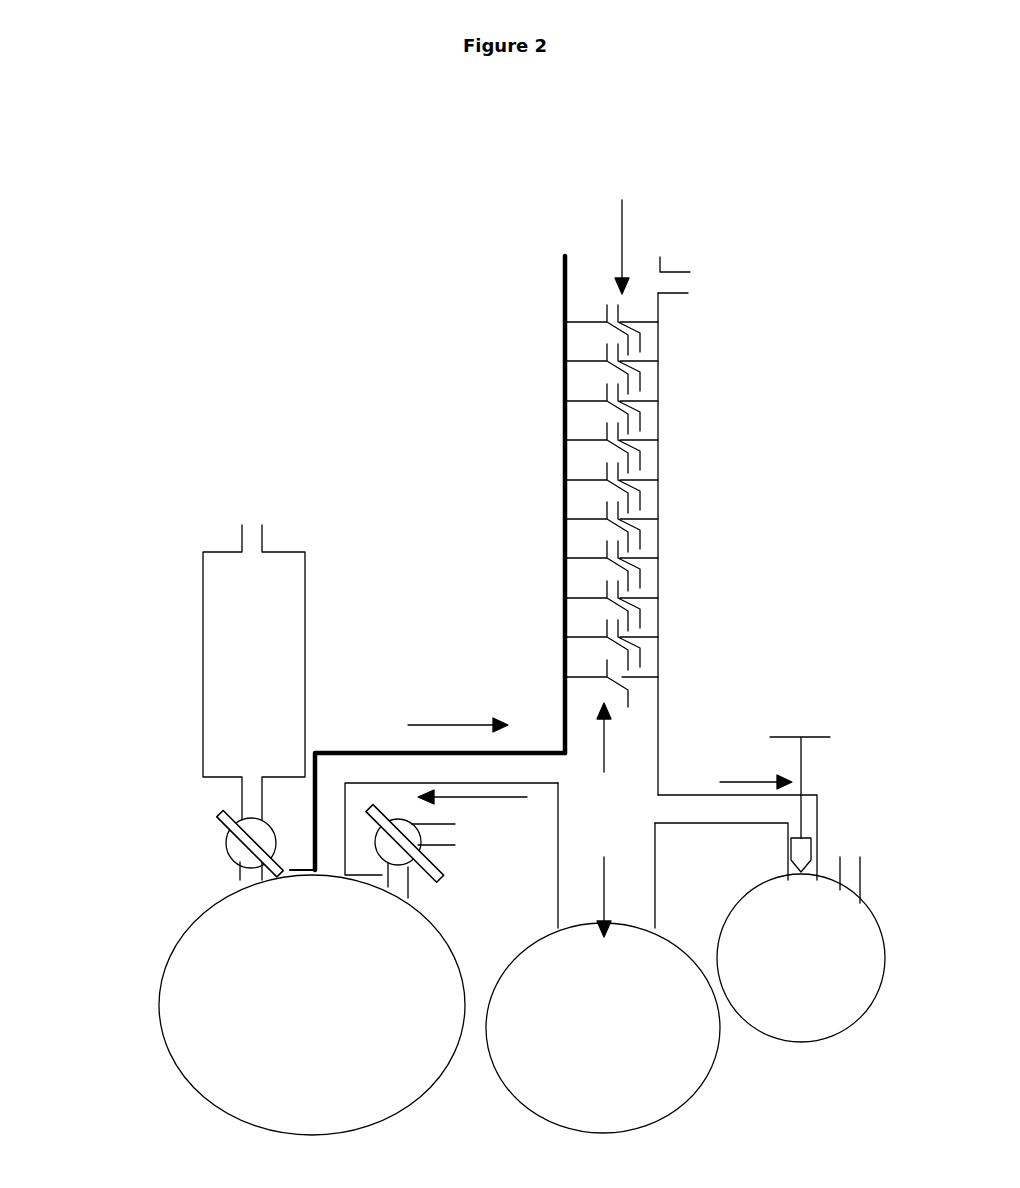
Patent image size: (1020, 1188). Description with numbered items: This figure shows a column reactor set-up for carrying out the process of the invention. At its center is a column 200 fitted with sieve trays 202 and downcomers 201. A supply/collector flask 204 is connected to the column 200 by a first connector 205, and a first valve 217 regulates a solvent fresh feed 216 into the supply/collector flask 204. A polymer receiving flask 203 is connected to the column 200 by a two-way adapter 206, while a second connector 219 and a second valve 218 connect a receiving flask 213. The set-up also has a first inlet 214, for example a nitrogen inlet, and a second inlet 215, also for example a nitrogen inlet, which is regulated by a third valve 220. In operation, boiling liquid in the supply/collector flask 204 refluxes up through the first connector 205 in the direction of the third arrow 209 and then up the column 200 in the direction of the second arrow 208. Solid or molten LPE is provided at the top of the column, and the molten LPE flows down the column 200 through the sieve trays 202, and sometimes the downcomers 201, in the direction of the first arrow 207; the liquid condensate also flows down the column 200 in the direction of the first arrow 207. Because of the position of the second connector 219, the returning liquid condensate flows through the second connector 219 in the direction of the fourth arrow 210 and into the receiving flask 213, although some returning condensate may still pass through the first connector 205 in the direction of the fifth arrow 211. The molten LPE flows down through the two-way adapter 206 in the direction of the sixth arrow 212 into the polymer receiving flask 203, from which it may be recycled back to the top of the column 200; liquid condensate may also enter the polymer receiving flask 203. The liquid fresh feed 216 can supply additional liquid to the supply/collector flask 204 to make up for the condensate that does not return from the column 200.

The column 200 is at (562, 463).
The downcomers 201 is at (660, 335).
The sieve trays 202 is at (660, 400).
The polymer receiving flask 203 is at (662, 1008).
The supply/collector flask 204 is at (268, 960).
The first connector 205 is at (356, 742).
The 2-way adapter 206 is at (657, 875).
The first arrow 207 is at (620, 234).
The second arrow 208 is at (621, 737).
The third arrow 209 is at (458, 714).
The fourth arrow 210 is at (756, 772).
The fifth arrow 211 is at (451, 829).
The sixth arrow 212 is at (606, 860).
The receiving flask 213 is at (863, 955).
The first inlet 214 is at (690, 285).
The second inlet 215 is at (452, 836).
The solvent fresh feed 216 is at (220, 625).
The first valve 217 is at (192, 790).
The second valve 218 is at (805, 717).
The second connector 219 is at (690, 795).
The third valve 220 is at (460, 882).